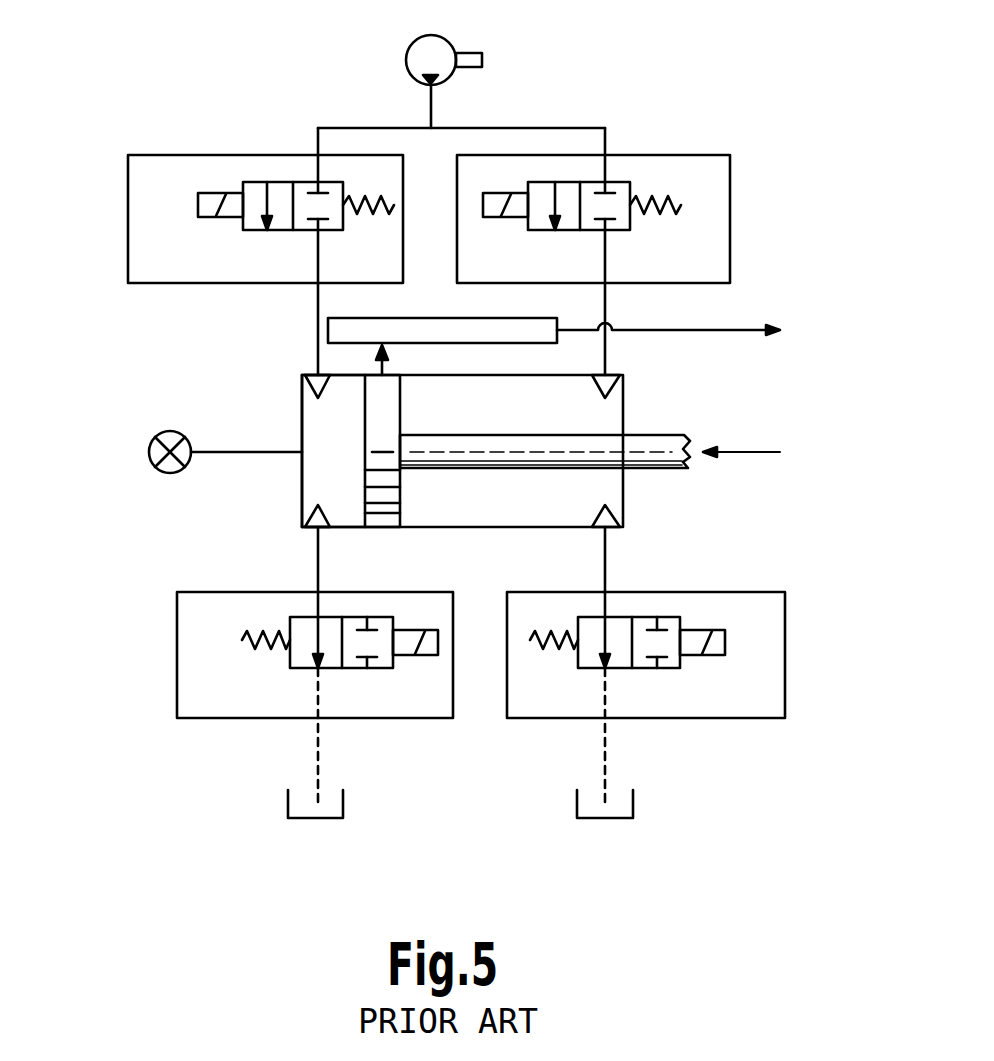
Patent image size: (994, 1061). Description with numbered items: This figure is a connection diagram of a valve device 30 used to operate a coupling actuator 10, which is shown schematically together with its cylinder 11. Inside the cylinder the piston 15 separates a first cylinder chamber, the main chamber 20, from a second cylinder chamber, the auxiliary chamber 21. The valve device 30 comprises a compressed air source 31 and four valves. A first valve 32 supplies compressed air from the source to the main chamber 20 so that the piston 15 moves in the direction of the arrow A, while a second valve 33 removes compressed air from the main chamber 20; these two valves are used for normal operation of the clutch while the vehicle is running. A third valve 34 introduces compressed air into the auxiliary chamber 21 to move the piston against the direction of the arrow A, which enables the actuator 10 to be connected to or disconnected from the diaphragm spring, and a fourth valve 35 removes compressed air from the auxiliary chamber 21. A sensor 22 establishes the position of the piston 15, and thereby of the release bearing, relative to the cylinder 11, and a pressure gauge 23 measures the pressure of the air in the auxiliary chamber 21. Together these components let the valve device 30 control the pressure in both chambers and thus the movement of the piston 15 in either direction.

The actuator 10 is at (499, 464).
The cylinder 11 is at (297, 488).
The piston 15 is at (388, 408).
The main chamber 20 is at (598, 415).
The auxiliary chamber 21 is at (322, 423).
The sensor 22 is at (338, 330).
The pressure gauge 23 is at (148, 453).
The valve device 30 is at (452, 412).
The compressed air source 31 is at (420, 50).
The first valve 32 is at (705, 180).
The second valve 33 is at (760, 615).
The third valve 34 is at (150, 183).
The fourth valve 35 is at (195, 615).